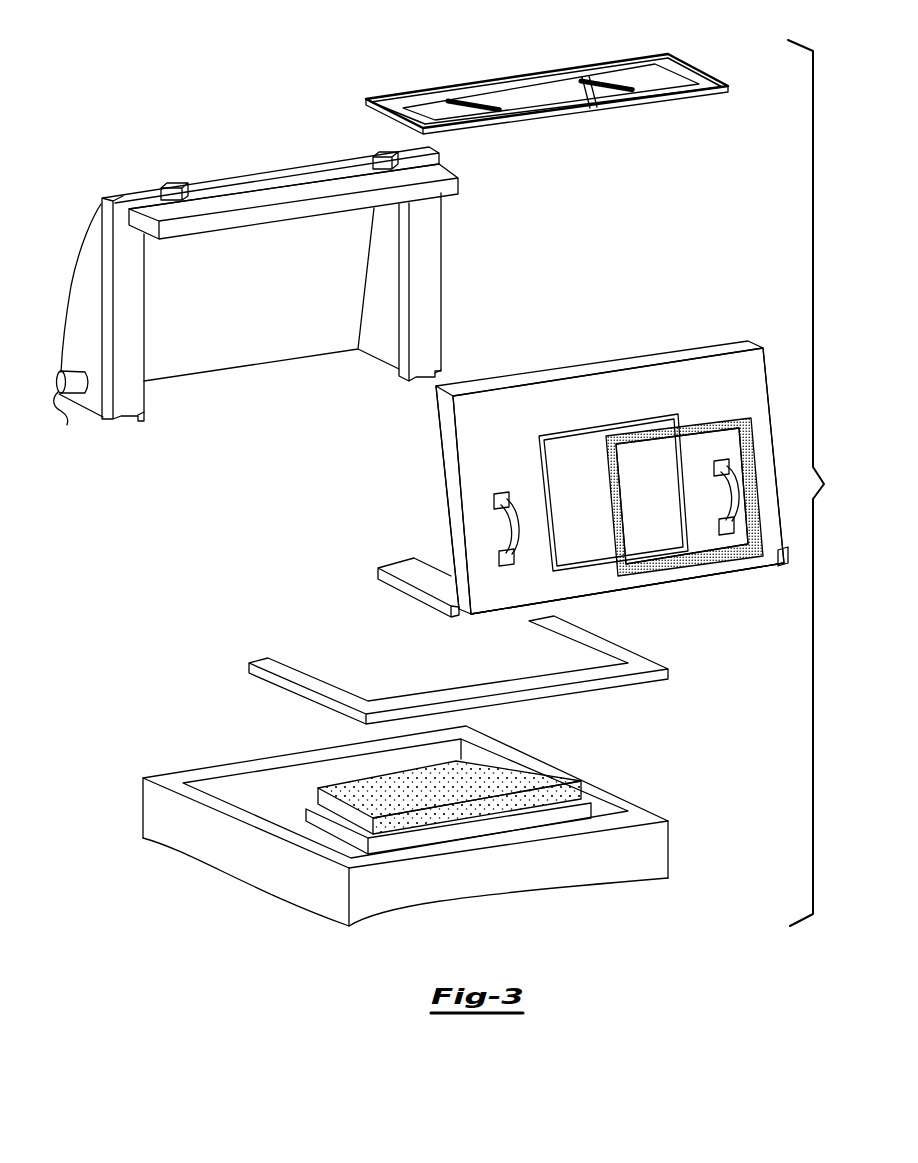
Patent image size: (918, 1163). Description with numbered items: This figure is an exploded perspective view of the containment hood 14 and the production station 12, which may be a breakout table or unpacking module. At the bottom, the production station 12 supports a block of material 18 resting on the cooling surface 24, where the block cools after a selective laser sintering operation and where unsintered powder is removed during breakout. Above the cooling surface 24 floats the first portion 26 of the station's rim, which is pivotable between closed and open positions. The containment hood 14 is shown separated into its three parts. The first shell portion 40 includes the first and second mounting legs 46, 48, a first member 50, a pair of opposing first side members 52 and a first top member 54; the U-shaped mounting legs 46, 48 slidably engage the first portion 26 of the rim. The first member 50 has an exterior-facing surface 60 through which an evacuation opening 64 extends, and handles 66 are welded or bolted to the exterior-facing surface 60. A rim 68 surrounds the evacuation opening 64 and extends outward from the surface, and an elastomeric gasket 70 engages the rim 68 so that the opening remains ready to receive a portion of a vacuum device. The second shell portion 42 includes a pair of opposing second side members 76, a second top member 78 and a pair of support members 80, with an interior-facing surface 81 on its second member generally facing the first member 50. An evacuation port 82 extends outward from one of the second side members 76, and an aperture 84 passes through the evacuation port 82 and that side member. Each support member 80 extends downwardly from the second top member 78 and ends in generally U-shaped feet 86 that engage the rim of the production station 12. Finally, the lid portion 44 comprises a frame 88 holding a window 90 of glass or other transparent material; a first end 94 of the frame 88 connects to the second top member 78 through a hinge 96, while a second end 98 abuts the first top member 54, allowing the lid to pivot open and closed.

The production station 12 is at (666, 858).
The containment hood 14 is at (180, 548).
The block of material 18 is at (553, 780).
The cooling surface 24 is at (581, 803).
The first portion 26 is at (275, 658).
The first shell portion 40 is at (644, 352).
The second shell portion 42 is at (283, 163).
The lid portion 44 is at (680, 60).
The first mounting leg 46 is at (412, 573).
The second mounting leg 48 is at (783, 543).
The first member 50 is at (660, 578).
The first side member 52 is at (447, 502).
The first top member 54 is at (740, 340).
The exterior-facing surface 60 is at (752, 381).
The evacuation opening 64 is at (642, 450).
The handle 66 is at (500, 493).
The rim 68 is at (542, 435).
The elastomeric gasket 70 is at (702, 420).
The second side member 76 is at (90, 238).
The second top member 78 is at (318, 188).
The support member 80 is at (137, 268).
The interior-facing surface 81 is at (320, 276).
The evacuation port 82 is at (72, 373).
The aperture 84 is at (78, 419).
The foot 86 is at (120, 423).
The frame 88 is at (717, 82).
The window 90 is at (652, 75).
The first end 94 is at (493, 90).
The hinge 96 is at (477, 82).
The second end 98 is at (585, 107).